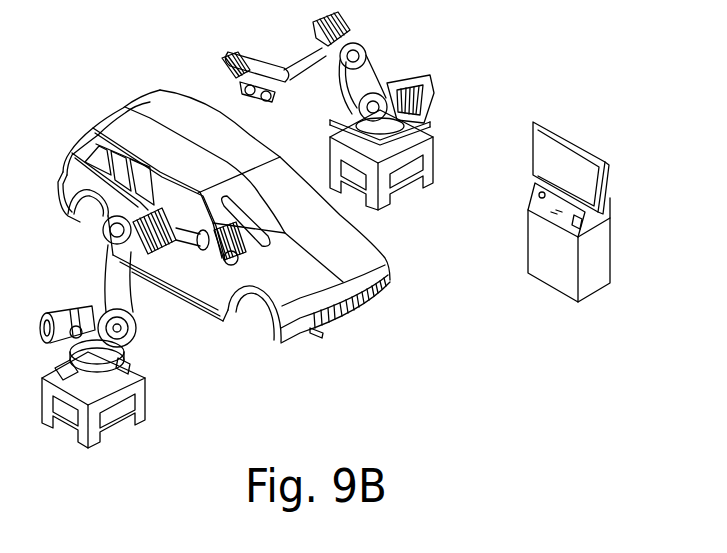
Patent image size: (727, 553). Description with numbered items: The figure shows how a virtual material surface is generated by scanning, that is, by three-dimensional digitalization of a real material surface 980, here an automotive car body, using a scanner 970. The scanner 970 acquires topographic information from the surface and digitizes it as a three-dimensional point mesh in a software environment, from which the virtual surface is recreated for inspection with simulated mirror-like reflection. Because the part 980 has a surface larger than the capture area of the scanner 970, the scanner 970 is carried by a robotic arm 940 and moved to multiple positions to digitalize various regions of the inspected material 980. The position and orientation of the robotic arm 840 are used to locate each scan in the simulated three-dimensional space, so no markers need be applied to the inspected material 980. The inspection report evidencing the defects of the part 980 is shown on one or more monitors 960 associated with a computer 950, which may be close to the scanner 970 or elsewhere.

The robotic arm 840 is at (108, 276).
The robotic arm 940 is at (366, 52).
The computer 950 is at (528, 237).
The monitor 960 is at (535, 155).
The scanner 970 is at (263, 249).
The real material surface 980 is at (237, 140).